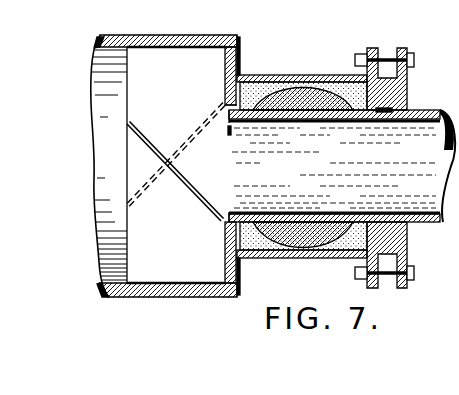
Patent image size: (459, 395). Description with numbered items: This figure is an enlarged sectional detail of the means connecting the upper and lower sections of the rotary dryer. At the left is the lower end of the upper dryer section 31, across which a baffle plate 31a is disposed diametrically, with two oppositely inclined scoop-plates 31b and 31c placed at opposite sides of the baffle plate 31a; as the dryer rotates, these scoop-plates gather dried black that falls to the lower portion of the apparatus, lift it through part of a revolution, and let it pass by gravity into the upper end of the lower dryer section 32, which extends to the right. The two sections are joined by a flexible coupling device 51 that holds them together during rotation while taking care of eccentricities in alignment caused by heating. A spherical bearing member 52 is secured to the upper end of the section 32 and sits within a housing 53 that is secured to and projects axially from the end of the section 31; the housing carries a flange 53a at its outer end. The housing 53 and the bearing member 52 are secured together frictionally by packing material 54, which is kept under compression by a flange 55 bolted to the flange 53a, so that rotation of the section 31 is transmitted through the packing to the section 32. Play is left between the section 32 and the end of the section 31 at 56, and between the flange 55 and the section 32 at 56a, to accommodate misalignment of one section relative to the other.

The dryer section 31 is at (99, 42).
The baffle plate 31a is at (176, 165).
The scoop-plate 31b is at (197, 132).
The scoop-plate 31c is at (192, 198).
The dryer section 32 is at (396, 128).
The flexible coupling device 51 is at (302, 75).
The spherical bearing member 52 is at (282, 230).
The housing 53 is at (250, 258).
The flange 53a is at (365, 67).
The packing material 54 is at (252, 83).
The flange 55 is at (405, 94).
The play 56 is at (231, 134).
The play 56a is at (379, 114).